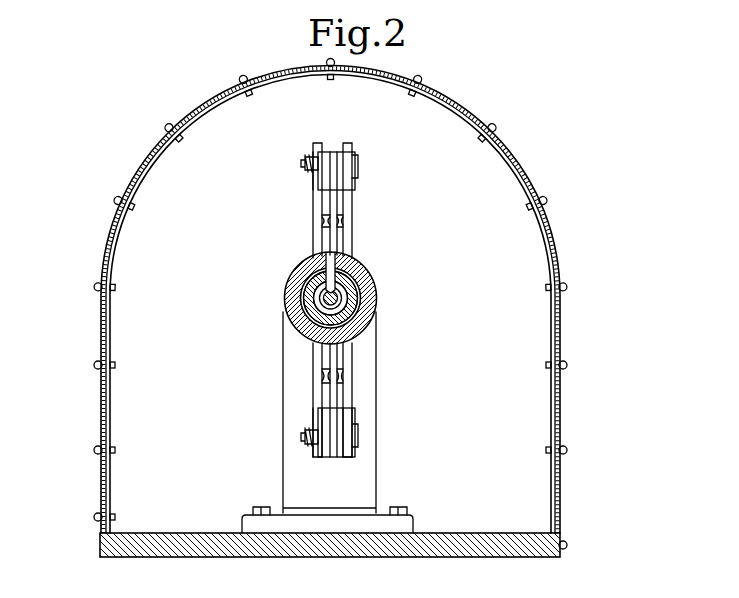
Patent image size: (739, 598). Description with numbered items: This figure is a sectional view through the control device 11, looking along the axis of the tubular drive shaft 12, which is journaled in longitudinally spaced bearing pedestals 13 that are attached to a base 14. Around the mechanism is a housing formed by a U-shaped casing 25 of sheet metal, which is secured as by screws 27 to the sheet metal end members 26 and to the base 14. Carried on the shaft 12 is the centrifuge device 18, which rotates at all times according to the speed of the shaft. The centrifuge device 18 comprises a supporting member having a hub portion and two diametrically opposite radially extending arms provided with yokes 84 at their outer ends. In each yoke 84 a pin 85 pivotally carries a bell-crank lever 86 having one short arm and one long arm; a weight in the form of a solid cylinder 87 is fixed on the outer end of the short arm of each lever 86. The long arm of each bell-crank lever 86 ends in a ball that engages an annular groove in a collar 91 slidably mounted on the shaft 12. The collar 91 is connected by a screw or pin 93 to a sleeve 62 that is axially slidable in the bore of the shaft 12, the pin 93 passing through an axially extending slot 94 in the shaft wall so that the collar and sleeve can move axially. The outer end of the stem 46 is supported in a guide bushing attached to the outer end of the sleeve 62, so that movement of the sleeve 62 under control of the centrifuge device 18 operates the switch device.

The control device 11 is at (138, 163).
The tubular drive shaft 12 is at (364, 330).
The bearing pedestal 13 is at (300, 491).
The base 14 is at (195, 547).
The centrifuge device 18 is at (353, 210).
The U-shaped casing 25 is at (98, 518).
The end member 26 is at (110, 419).
The screw 27 is at (541, 196).
The stem 46 is at (326, 300).
The sleeve 62 is at (306, 296).
The yoke 84 is at (338, 192).
The pin 85 is at (303, 162).
The bell-crank lever 86 is at (318, 212).
The weight 87 is at (332, 152).
The collar 91 is at (353, 308).
The pin 93 is at (348, 268).
The slot 94 is at (360, 289).